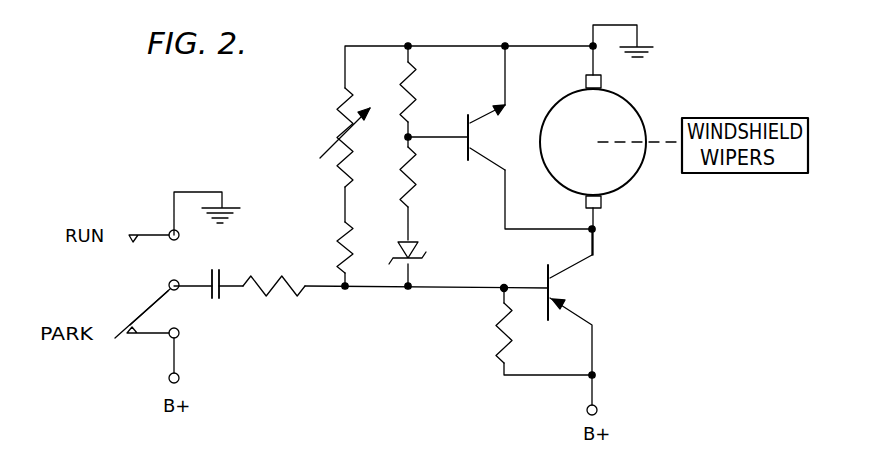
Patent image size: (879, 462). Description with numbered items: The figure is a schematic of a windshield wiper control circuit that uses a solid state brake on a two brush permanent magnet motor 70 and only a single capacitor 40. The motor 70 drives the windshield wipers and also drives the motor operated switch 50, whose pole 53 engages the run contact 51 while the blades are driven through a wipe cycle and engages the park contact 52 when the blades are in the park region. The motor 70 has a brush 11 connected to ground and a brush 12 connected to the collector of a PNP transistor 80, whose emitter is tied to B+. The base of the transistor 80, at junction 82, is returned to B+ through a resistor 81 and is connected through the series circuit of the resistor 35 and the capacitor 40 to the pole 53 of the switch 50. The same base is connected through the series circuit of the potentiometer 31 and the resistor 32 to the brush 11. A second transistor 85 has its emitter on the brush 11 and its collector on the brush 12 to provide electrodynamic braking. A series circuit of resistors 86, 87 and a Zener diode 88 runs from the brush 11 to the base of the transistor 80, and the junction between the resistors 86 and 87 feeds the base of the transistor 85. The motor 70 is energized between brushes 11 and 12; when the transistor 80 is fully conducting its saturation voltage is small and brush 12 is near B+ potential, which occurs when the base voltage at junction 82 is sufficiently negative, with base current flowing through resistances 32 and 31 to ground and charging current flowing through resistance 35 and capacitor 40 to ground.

The brush 11 is at (602, 82).
The brush 12 is at (602, 202).
The potentiometer 31 is at (340, 108).
The resistor 32 is at (342, 233).
The resistor 35 is at (273, 277).
The capacitor 40 is at (217, 268).
The motor operated switch 50 is at (137, 284).
The run contact 51 is at (140, 233).
The park contact 52 is at (147, 337).
The pole 53 is at (153, 305).
The two brush permanent magnet motor 70 is at (638, 115).
The PNP transistor 80 is at (573, 290).
The resistor 81 is at (497, 345).
The junction 82 is at (488, 287).
The second transistor 85 is at (498, 132).
The resistor 86 is at (415, 93).
The resistor 87 is at (417, 177).
The Zener diode 88 is at (420, 253).